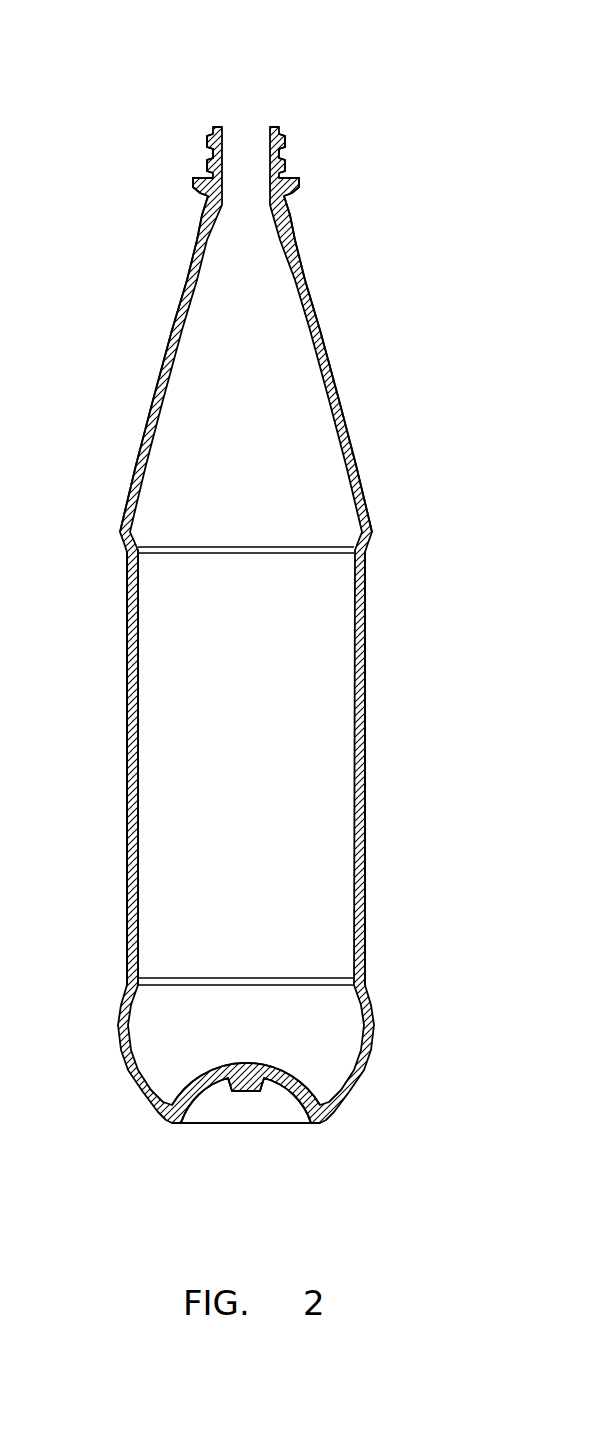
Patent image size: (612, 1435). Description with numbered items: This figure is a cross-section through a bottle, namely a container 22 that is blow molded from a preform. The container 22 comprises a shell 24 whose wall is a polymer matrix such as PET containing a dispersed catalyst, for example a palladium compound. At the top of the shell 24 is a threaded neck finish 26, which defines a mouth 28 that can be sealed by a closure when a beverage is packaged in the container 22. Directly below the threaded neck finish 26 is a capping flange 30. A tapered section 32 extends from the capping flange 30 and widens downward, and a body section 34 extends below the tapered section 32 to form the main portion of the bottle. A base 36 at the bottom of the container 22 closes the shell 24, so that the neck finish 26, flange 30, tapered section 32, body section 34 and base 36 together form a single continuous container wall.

The container 22 is at (362, 438).
The shell 24 is at (368, 658).
The threaded neck finish 26 is at (286, 153).
The mouth 28 is at (247, 126).
The capping flange 30 is at (301, 184).
The tapered section 32 is at (165, 328).
The body section 34 is at (127, 843).
The base 36 is at (246, 1102).